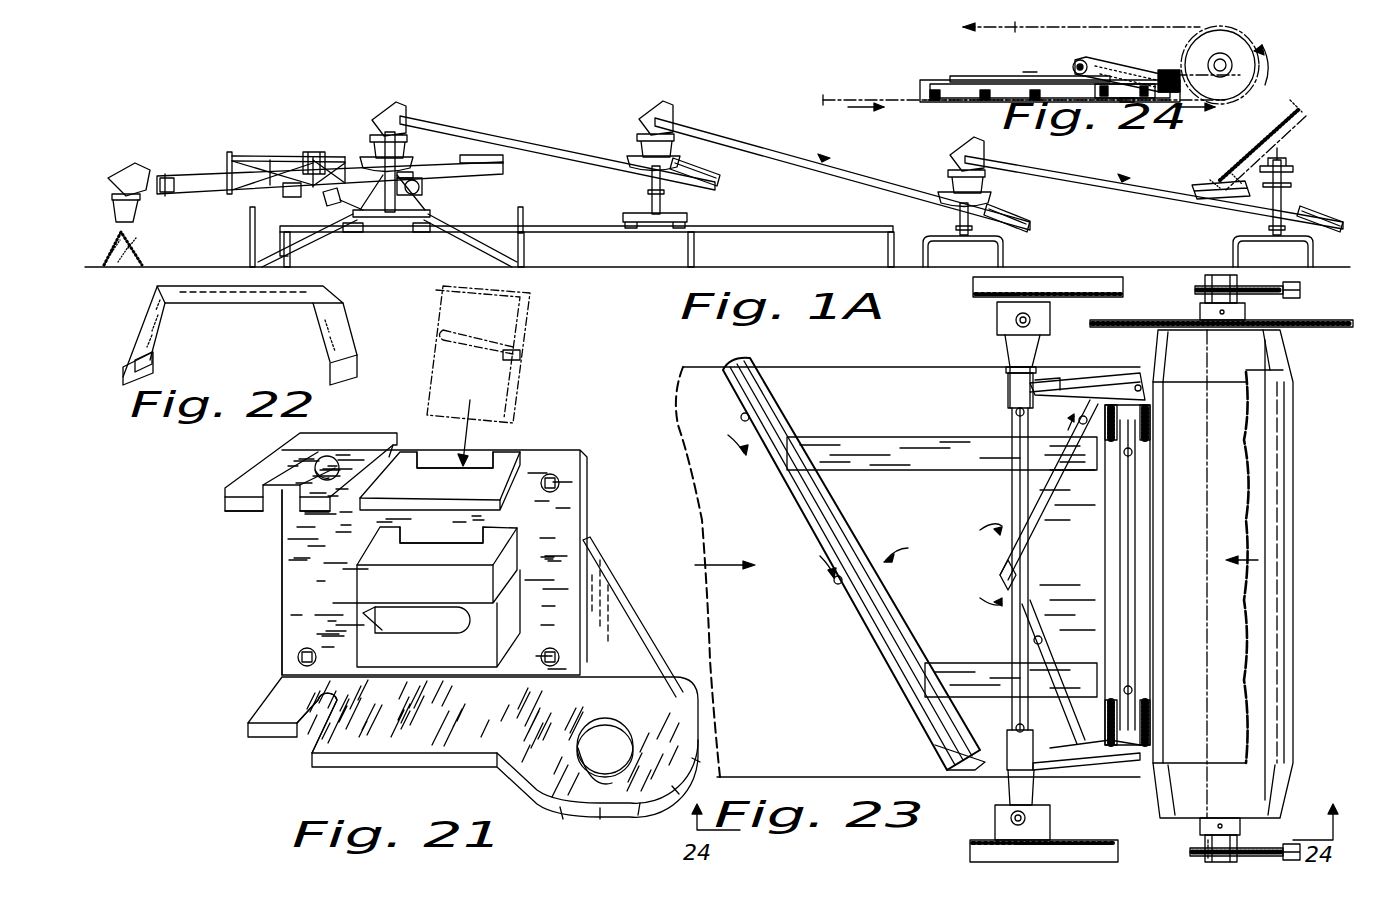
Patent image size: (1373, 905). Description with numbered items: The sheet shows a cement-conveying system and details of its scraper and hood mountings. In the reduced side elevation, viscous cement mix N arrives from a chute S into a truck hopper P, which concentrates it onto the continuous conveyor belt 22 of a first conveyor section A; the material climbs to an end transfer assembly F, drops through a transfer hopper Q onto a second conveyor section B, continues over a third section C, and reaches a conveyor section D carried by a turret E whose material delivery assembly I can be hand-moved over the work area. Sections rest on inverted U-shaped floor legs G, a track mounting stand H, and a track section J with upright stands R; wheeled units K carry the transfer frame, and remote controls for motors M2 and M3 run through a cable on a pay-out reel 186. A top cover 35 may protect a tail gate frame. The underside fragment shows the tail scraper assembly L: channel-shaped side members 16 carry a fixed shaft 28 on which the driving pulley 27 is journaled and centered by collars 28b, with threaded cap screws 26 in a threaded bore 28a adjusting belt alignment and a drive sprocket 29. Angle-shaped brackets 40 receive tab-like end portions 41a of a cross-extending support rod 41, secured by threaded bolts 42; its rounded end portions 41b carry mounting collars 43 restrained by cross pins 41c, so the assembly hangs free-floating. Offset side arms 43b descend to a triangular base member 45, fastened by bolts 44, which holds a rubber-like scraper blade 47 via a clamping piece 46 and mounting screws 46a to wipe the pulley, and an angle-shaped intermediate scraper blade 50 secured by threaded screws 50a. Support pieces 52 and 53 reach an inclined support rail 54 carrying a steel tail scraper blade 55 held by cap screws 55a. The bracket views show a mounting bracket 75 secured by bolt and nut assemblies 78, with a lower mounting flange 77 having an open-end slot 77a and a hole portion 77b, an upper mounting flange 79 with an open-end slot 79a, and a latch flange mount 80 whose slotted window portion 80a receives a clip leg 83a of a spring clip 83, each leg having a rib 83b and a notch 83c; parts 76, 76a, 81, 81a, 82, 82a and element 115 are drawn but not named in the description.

In FIG. 23, the channel-shaped side members 16 is at (972, 292).
In FIG. 24, the continuous conveyor belt 22 is at (1038, 46).
In FIG. 23, the continuous conveyor belt 22 is at (710, 512).
In FIG. 23, the threaded cap screws 26 is at (1296, 288).
In FIG. 24, the main belt driving pulley 27 is at (1264, 34).
In FIG. 23, the main belt driving pulley 27 is at (1238, 620).
In FIG. 23, the fixed shaft 28 is at (1204, 294).
In FIG. 23, the threaded bore 28a is at (1206, 842).
In FIG. 23, the collars 28b is at (1244, 304).
In FIG. 23, the drive sprocket 29 is at (1308, 328).
In FIG. 1A, the removable top cover 35 is at (492, 146).
In FIG. 23, the angle-shaped side brackets 40 is at (996, 310).
In FIG. 24, the cross-extending support rod 41 is at (1086, 60).
In FIG. 23, the cross-extending support rod 41 is at (1010, 486).
In FIG. 23, the tab-like end portions 41a is at (1008, 354).
In FIG. 23, the rounded end portions 41b is at (1008, 372).
In FIG. 23, the cross pins 41c is at (1012, 422).
In FIG. 23, the threaded bolts 42 is at (1014, 322).
In FIG. 24, the mounting collars 43 is at (1136, 66).
In FIG. 23, the mounting collars 43 is at (1008, 396).
In FIG. 23, the offset side arms 43b is at (1042, 374).
In FIG. 24, the bolts 44 is at (1196, 84).
In FIG. 23, the bolts 44 is at (1142, 376).
In FIG. 24, the triangular base member 45 is at (1096, 82).
In FIG. 23, the triangular base member 45 is at (1084, 550).
In FIG. 23, the metal clamping piece 46 is at (1130, 536).
In FIG. 23, the mounting screws 46a is at (1140, 460).
In FIG. 24, the scraper blade 47 is at (1174, 66).
In FIG. 23, the scraper blade 47 is at (1142, 570).
In FIG. 24, the intermediate scraper blade 50 is at (1126, 102).
In FIG. 23, the intermediate scraper blade 50 is at (1002, 576).
In FIG. 23, the threaded screws 50a is at (1084, 416).
In FIG. 24, the support piece 52 is at (1016, 76).
In FIG. 23, the support piece 52 is at (890, 434).
In FIG. 23, the support piece 53 is at (974, 662).
In FIG. 24, the inclined cross-extending support rail 54 is at (932, 80).
In FIG. 23, the inclined cross-extending support rail 54 is at (830, 514).
In FIG. 24, the tail scraper blade 55 is at (970, 112).
In FIG. 23, the tail scraper blade 55 is at (860, 626).
In FIG. 23, the cap screws 55a is at (840, 582).
In FIG. 21, the mounting bracket 75 is at (300, 560).
In FIG. 21, the upright plate 76 is at (582, 514).
In FIG. 21, the bolt 76a is at (560, 478).
In FIG. 21, the lower mounting flange 77 is at (414, 754).
In FIG. 21, the open-end slot 77a is at (300, 740).
In FIG. 21, the hole portion 77b is at (602, 764).
In FIG. 21, the bolt and nut assemblies 78 is at (616, 592).
In FIG. 21, the upper mounting flange 79 is at (238, 488).
In FIG. 21, the open-end slot 79a is at (330, 452).
In FIG. 21, the latch flange mount 80 is at (456, 497).
In FIG. 21, the slotted window portion 80a is at (502, 466).
In FIG. 21, the block 81 is at (454, 562).
In FIG. 21, the block notch 81a is at (472, 540).
In FIG. 21, the block 82 is at (438, 668).
In FIG. 21, the block slot 82a is at (448, 626).
In FIG. 22, the spring clip 83 is at (238, 308).
In FIG. 22, the clip leg 83a is at (161, 338).
In FIG. 22, the rib 83b is at (159, 353).
In FIG. 22, the notch 83c is at (124, 370).
In FIG. 1A, the gear box 115 is at (408, 197).
In FIG. 1A, the pay-out reel 186 is at (431, 200).
In FIG. 1A, the first conveyor section A is at (1052, 160).
In FIG. 1A, the second conveyor section B is at (774, 154).
In FIG. 1A, the third conveyor section C is at (500, 130).
In FIG. 1A, the conveyor section D is at (170, 190).
In FIG. 1A, the turret E is at (292, 196).
In FIG. 1A, the end transfer assembly F is at (378, 122).
In FIG. 1A, the stationary floor legs G is at (1008, 246).
In FIG. 1A, the track mounting stand H is at (676, 212).
In FIG. 1A, the material delivery assembly I is at (110, 184).
In FIG. 1A, the track section J is at (374, 236).
In FIG. 1A, the wheeled units K is at (646, 174).
In FIG. 24, the tail scraper assembly L is at (1060, 66).
In FIG. 23, the tail scraper assembly L is at (888, 558).
In FIG. 1A, the motor M2 is at (336, 152).
In FIG. 1A, the motor M3 is at (334, 202).
In FIG. 1A, the cement mix N is at (120, 254).
In FIG. 1A, the truck hopper P is at (1204, 182).
In FIG. 1A, the transfer hopper Q is at (368, 156).
In FIG. 1A, the upright stands R is at (284, 258).
In FIG. 1A, the chute S is at (1276, 117).